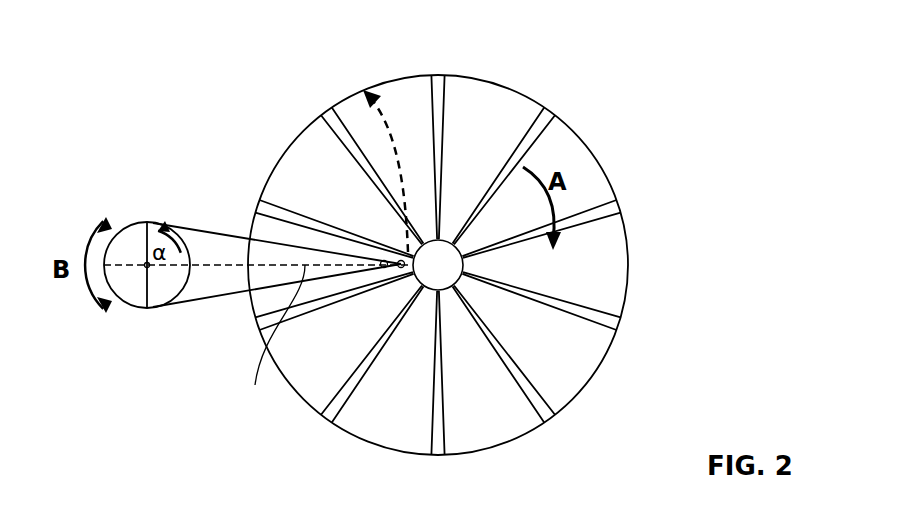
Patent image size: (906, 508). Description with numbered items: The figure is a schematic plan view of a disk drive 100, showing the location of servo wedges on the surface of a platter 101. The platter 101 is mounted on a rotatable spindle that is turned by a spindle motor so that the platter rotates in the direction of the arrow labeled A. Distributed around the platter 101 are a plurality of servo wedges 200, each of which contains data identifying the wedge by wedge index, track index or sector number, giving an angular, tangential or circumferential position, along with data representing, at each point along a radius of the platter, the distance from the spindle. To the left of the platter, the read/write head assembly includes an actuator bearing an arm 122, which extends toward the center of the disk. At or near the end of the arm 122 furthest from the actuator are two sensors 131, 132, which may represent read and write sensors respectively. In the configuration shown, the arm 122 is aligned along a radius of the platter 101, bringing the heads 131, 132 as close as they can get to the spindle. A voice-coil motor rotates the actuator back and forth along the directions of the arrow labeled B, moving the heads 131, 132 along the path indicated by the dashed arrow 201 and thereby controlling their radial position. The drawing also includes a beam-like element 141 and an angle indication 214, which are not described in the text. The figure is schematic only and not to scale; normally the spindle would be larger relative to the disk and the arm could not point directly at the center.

The disk drive 100 is at (174, 38).
The platter 101 is at (373, 88).
The dashed arrow 201 is at (391, 128).
The servo wedge 200 is at (442, 85).
The arm 122 is at (178, 222).
The light beam cone 141 is at (207, 265).
The sensor 132 is at (384, 268).
The sensor 131 is at (401, 268).
The beam angle 214 is at (271, 338).